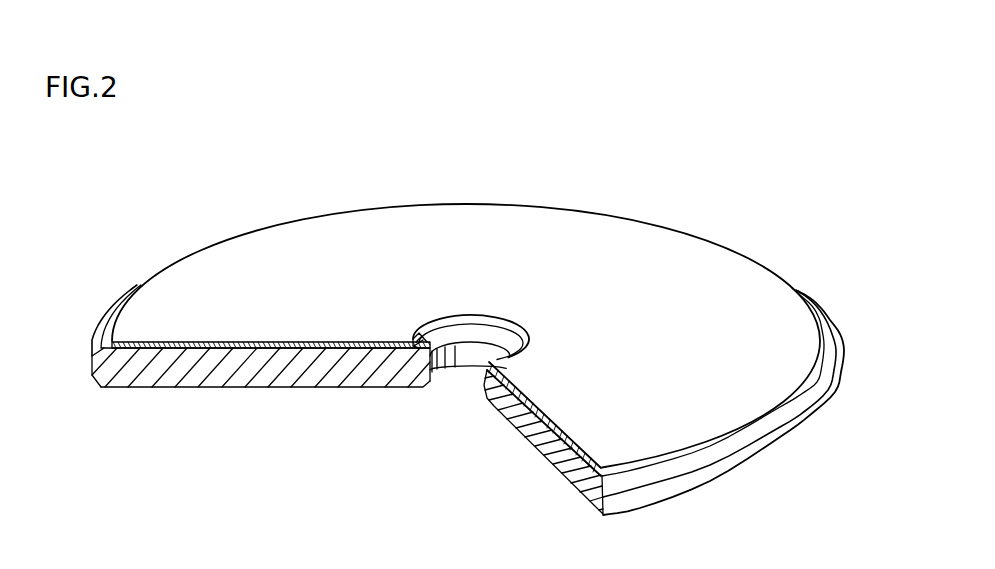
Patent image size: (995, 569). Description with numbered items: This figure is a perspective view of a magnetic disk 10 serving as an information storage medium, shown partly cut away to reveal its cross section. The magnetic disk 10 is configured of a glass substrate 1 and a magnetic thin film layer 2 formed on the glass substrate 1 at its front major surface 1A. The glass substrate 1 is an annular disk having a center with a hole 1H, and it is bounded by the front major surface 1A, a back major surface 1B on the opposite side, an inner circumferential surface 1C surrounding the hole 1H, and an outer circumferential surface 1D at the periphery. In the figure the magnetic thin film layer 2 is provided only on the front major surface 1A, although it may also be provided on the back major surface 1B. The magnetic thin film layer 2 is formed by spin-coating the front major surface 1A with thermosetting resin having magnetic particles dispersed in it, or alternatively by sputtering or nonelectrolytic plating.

The magnetic disk 10 is at (678, 162).
The magnetic thin film layer 2 is at (712, 268).
The glass substrate 1 is at (838, 350).
The front major surface 1A is at (233, 350).
The back major surface 1B is at (162, 389).
The inner circumferential surface 1C is at (440, 370).
The outer circumferential surface 1D is at (90, 374).
The hole 1H is at (463, 372).